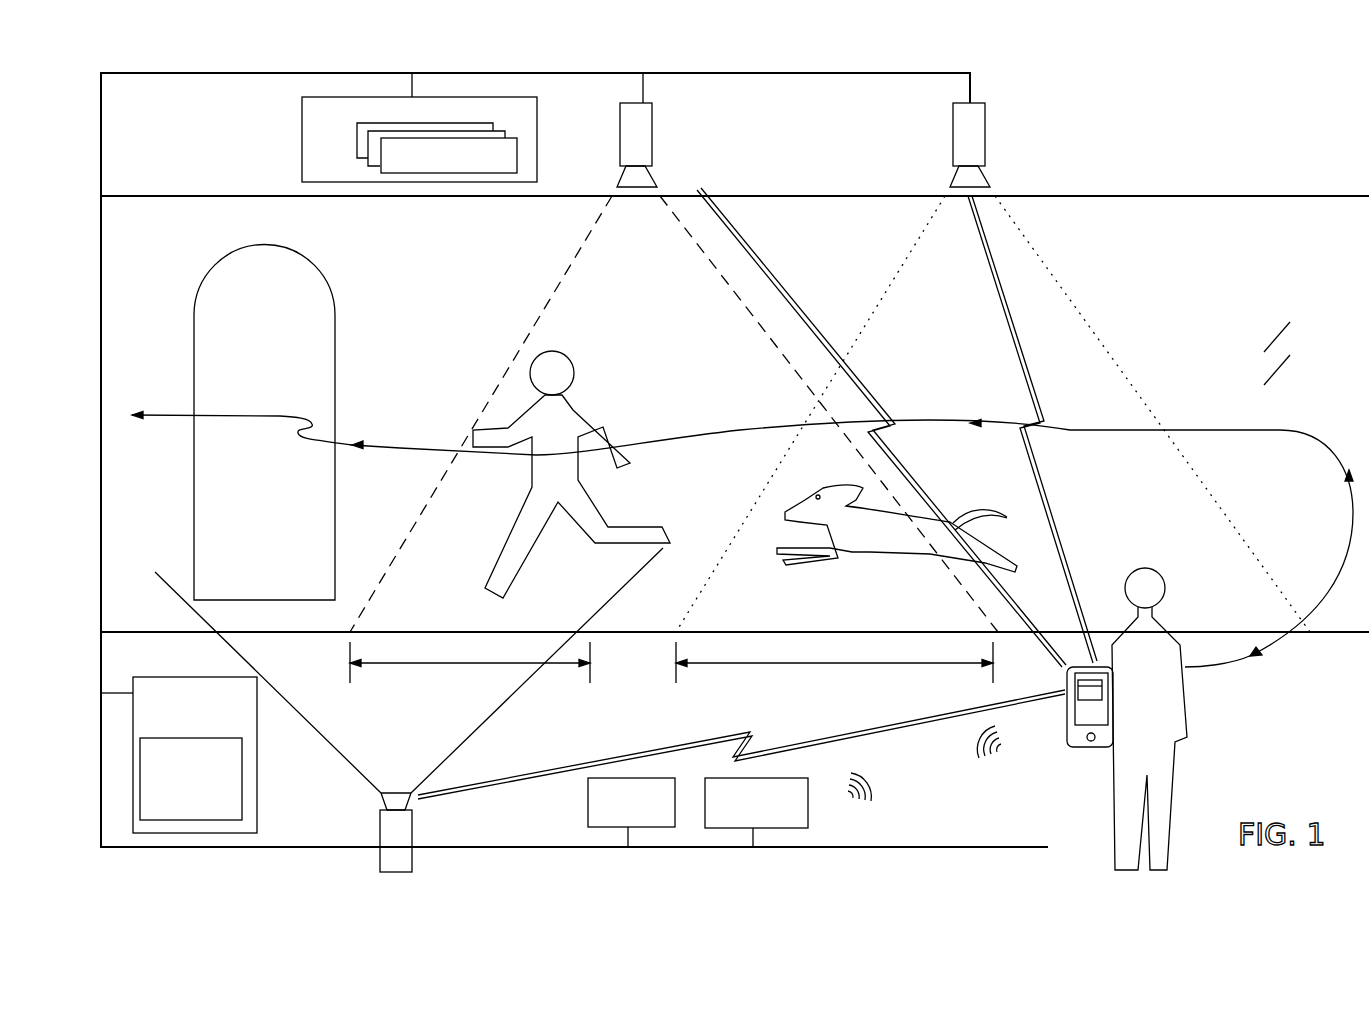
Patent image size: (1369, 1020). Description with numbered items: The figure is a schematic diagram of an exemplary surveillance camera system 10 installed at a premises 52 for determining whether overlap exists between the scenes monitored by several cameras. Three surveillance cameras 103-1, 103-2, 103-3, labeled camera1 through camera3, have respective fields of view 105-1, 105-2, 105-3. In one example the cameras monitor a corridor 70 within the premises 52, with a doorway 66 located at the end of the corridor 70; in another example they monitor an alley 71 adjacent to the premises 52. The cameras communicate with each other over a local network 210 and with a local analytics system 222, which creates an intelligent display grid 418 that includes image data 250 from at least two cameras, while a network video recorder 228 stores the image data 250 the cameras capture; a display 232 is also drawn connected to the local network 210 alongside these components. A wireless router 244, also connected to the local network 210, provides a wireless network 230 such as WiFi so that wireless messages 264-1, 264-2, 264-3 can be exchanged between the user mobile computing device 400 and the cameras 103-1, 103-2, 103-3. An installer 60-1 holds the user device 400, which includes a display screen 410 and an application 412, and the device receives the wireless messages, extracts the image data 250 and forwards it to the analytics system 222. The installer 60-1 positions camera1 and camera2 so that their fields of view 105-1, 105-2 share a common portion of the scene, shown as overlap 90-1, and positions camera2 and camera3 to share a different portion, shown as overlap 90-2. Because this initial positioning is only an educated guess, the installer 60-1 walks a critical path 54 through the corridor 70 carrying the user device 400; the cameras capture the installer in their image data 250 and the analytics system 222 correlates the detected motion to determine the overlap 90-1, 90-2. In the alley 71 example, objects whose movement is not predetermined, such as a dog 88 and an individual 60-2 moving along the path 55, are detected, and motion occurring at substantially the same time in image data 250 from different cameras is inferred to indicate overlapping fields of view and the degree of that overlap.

The surveillance camera system 10 is at (1302, 180).
The premises 52 is at (1200, 196).
The critical path 54 is at (1250, 430).
The path of individual 55 is at (708, 437).
The installer 60-1 is at (1185, 722).
The individual 60-2 is at (578, 412).
The doorway 66 is at (335, 367).
The corridor 70 is at (1290, 355).
The alley 71 is at (1290, 322).
The dog 88 is at (865, 555).
The overlap 90-1 is at (470, 663).
The overlap 90-2 is at (832, 663).
The surveillance camera 103-1 is at (378, 832).
The surveillance camera 103-2 is at (652, 135).
The surveillance camera 103-3 is at (985, 118).
The field of view 105-1 is at (503, 708).
The field of view 105-2 is at (545, 290).
The field of view 105-3 is at (1105, 328).
The local network 210 is at (133, 73).
The analytics system 222 is at (179, 755).
The network video recorder 228 is at (419, 139).
The wireless network 230 is at (924, 768).
The display 232 is at (631, 812).
The wireless router 244 is at (756, 812).
The image data 250 is at (437, 148).
The wireless message 264-1 is at (878, 722).
The wireless message 264-2 is at (813, 337).
The wireless message 264-3 is at (1045, 475).
The user mobile computing device 400 is at (1096, 713).
The display screen 410 is at (1090, 709).
The application 412 is at (1088, 690).
The intelligent display grid 418 is at (191, 779).